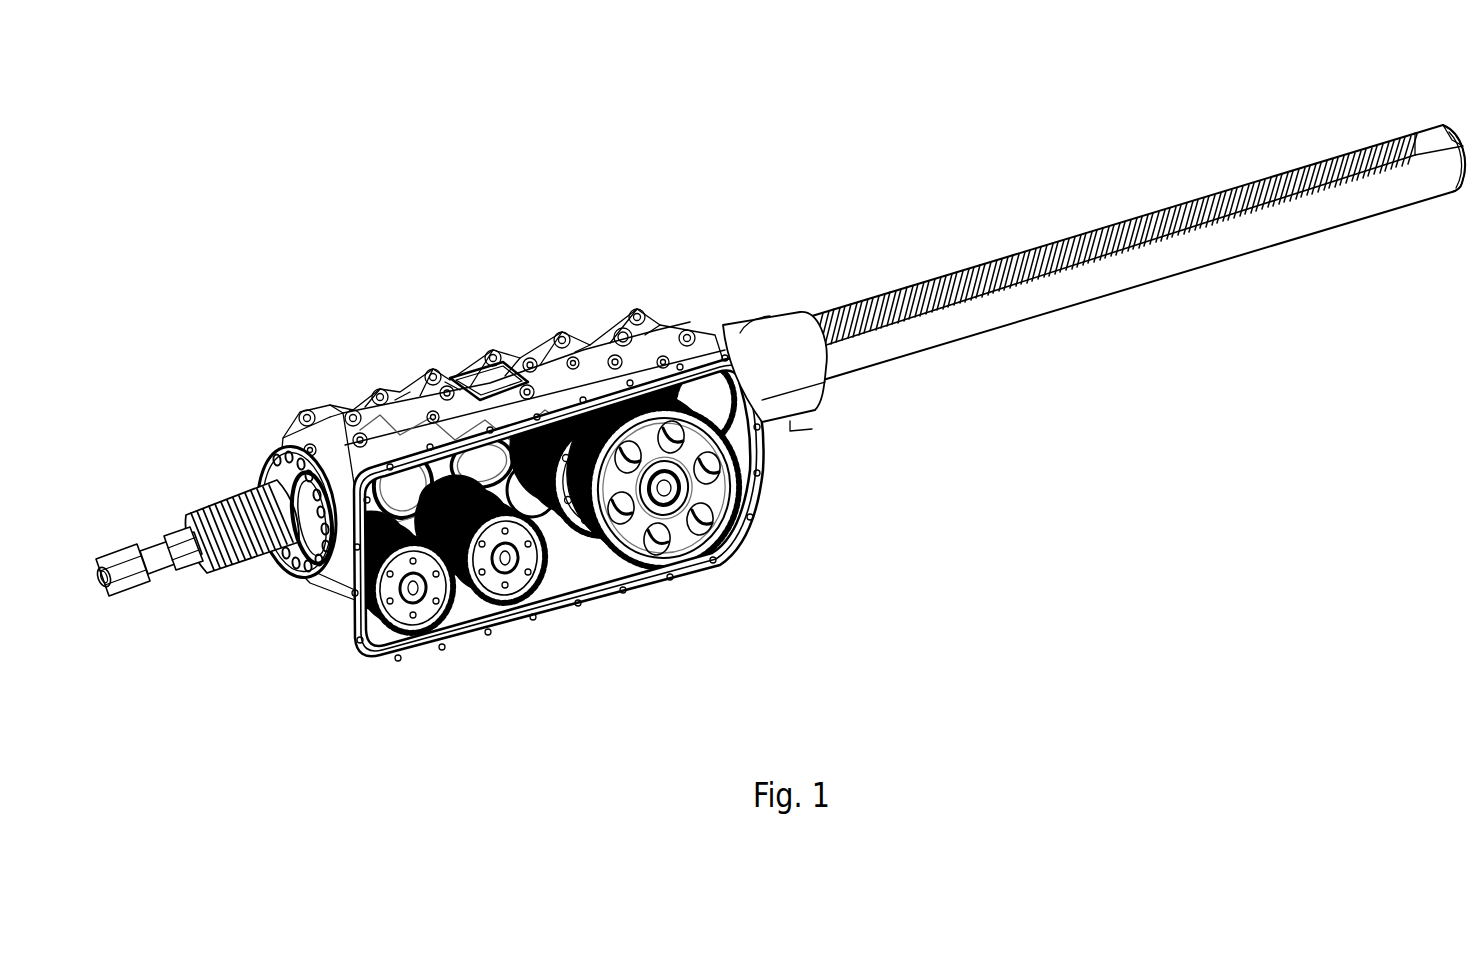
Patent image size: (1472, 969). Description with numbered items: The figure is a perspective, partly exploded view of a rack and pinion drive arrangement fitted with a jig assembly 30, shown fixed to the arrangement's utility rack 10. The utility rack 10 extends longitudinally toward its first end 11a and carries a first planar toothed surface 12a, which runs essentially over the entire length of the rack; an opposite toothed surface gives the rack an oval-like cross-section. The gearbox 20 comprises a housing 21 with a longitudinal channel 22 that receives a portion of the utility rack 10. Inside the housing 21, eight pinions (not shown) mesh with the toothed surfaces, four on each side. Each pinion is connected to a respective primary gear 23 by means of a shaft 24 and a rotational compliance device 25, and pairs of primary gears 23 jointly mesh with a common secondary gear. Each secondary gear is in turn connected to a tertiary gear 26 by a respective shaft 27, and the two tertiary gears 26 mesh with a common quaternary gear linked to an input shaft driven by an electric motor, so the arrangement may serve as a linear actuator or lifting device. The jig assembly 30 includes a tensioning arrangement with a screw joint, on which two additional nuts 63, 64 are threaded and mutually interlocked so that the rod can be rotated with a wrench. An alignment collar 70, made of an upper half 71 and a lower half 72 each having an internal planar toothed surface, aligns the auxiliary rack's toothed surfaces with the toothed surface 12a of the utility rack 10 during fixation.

The utility rack 10 is at (1253, 250).
The first end 11a is at (1450, 130).
The first planar toothed surface 12a is at (1227, 195).
The gearbox 20 is at (413, 670).
The housing 21 is at (757, 500).
The longitudinal channel 22 is at (287, 555).
The primary gear 23 is at (733, 345).
The shaft 24 is at (418, 596).
The rotational compliance device 25 is at (380, 617).
The tertiary gear 26 is at (720, 523).
The shaft 27 is at (670, 497).
The jig assembly 30 is at (221, 500).
The additional nut 63 is at (118, 548).
The additional nut 64 is at (117, 587).
The alignment collar 70 is at (780, 305).
The upper half 71 is at (762, 312).
The lower half 72 is at (812, 429).